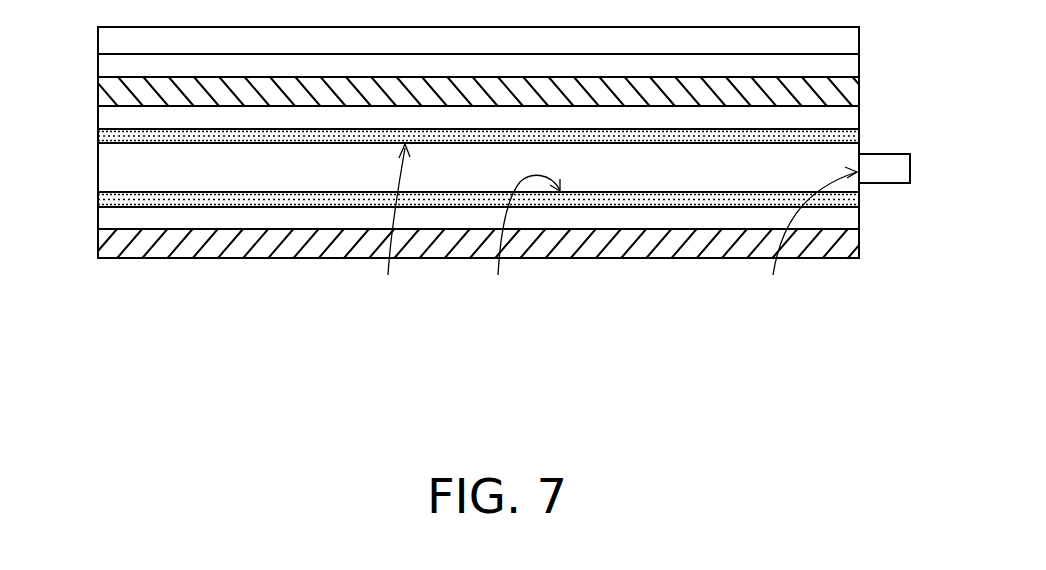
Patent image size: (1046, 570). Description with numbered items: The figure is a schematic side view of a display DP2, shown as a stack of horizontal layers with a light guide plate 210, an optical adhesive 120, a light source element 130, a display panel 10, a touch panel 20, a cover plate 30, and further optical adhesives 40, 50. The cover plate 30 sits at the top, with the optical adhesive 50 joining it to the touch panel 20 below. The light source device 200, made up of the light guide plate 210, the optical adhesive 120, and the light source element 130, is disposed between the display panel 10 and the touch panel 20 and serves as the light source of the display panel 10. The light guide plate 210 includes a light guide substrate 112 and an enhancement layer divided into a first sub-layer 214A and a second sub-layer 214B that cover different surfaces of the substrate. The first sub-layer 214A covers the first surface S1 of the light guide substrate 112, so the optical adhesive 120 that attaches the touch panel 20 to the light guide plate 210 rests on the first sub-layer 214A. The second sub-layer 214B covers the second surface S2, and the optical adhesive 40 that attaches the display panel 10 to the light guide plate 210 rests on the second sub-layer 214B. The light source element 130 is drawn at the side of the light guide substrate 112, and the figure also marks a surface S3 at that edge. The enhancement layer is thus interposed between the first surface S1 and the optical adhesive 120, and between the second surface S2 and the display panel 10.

The display DP2 is at (505, 225).
The cover plate 30 is at (853, 39).
The optical adhesive 50 is at (850, 67).
The touch panel 20 is at (853, 92).
The optical adhesive 120 is at (853, 118).
The light source device 200 is at (484, 256).
The light guide plate 210 is at (478, 272).
The first sub-layer 214A is at (639, 133).
The light guide substrate 112 is at (683, 173).
The second sub-layer 214B is at (735, 198).
The optical adhesive 40 is at (853, 217).
The display panel 10 is at (853, 245).
The light source element 130 is at (905, 169).
The first surface S1 is at (392, 225).
The second surface S2 is at (524, 241).
The third surface S3 is at (810, 237).